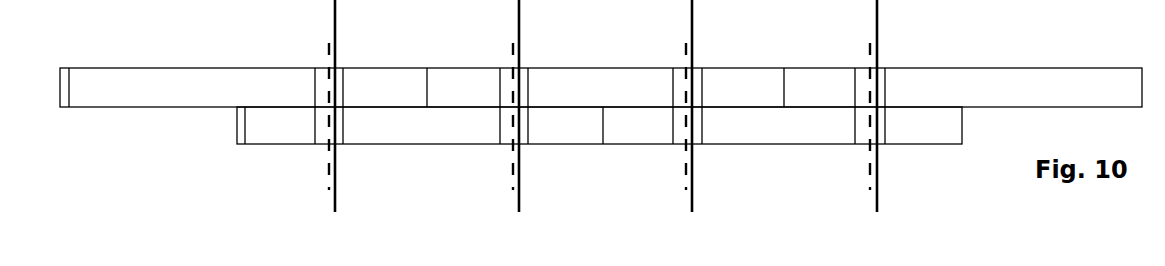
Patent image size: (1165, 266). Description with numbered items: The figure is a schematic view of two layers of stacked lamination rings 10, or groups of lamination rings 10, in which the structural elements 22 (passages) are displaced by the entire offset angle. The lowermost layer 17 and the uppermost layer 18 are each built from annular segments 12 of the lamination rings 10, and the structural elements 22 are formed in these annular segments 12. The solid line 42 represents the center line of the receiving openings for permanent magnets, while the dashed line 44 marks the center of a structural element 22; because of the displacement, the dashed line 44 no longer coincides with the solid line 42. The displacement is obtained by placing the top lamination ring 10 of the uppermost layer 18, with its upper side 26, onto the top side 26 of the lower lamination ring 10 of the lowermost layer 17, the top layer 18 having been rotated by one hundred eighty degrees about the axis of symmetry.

The lamination ring 10 is at (807, 58).
The annular segment 12 is at (218, 64).
The lowermost layer 17 is at (237, 127).
The uppermost layer 18 is at (60, 88).
The structural element 22 is at (344, 75).
The side of lamination ring 26 is at (271, 94).
The solid line 42 is at (521, 184).
The dashed line 44 is at (327, 172).